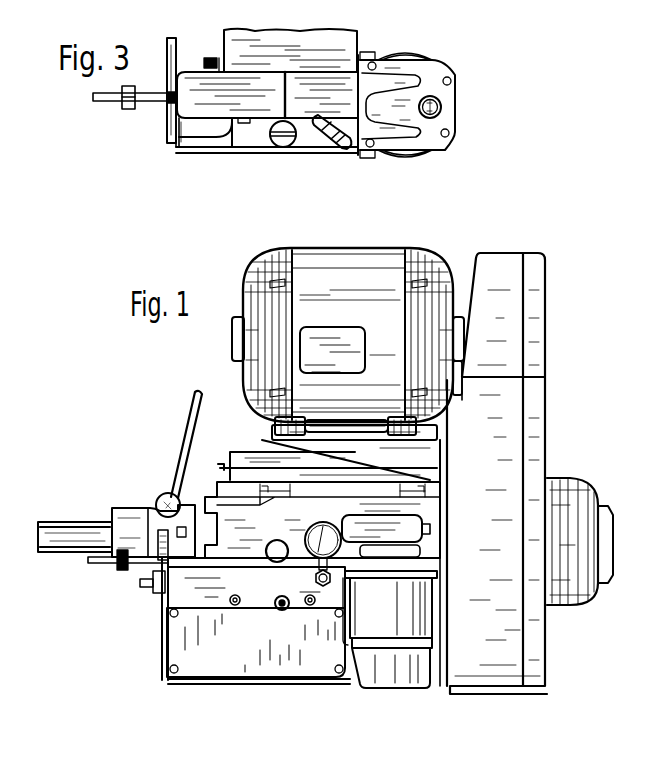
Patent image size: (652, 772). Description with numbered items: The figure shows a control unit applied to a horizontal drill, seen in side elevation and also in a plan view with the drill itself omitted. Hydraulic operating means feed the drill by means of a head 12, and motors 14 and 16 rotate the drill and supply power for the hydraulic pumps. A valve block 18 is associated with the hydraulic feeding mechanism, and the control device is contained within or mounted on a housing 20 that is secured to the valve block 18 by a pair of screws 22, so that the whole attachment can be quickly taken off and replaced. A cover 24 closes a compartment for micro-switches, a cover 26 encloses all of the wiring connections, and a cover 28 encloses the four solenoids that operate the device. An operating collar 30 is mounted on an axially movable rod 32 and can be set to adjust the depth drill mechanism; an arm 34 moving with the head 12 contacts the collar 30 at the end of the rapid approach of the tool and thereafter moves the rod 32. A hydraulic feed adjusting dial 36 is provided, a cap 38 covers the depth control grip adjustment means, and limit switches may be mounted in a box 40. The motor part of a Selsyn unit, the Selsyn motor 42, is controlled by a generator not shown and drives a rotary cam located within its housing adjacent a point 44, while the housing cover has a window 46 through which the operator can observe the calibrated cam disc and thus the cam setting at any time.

In FIG. 1, the head 12 is at (117, 528).
In FIG. 1, the motor 14 is at (380, 262).
In FIG. 1, the motor 16 is at (581, 483).
In FIG. 3, the valve block 18 is at (277, 36).
In FIG. 1, the housing 20 is at (200, 598).
In FIG. 3, the screws 22 is at (318, 127).
In FIG. 1, the screws 22 is at (309, 594).
In FIG. 3, the cover 24 is at (168, 125).
In FIG. 1, the cover 24 is at (164, 603).
In FIG. 3, the cover 26 is at (218, 146).
In FIG. 1, the cover 26 is at (220, 665).
In FIG. 1, the cover 28 is at (178, 683).
In FIG. 3, the operating collar 30 is at (131, 108).
In FIG. 1, the operating collar 30 is at (121, 571).
In FIG. 3, the rod 32 is at (93, 96).
In FIG. 1, the rod 32 is at (90, 562).
In FIG. 3, the arm 34 is at (172, 56).
In FIG. 1, the arm 34 is at (158, 535).
In FIG. 3, the hydraulic feed adjusting dial 36 is at (217, 57).
In FIG. 1, the cap 38 is at (280, 609).
In FIG. 1, the box 40 is at (402, 525).
In FIG. 3, the Selsyn motor 42 is at (400, 58).
In FIG. 1, the Selsyn motor 42 is at (430, 628).
In FIG. 3, the point 44 is at (437, 73).
In FIG. 1, the point 44 is at (437, 573).
In FIG. 3, the window 46 is at (443, 107).